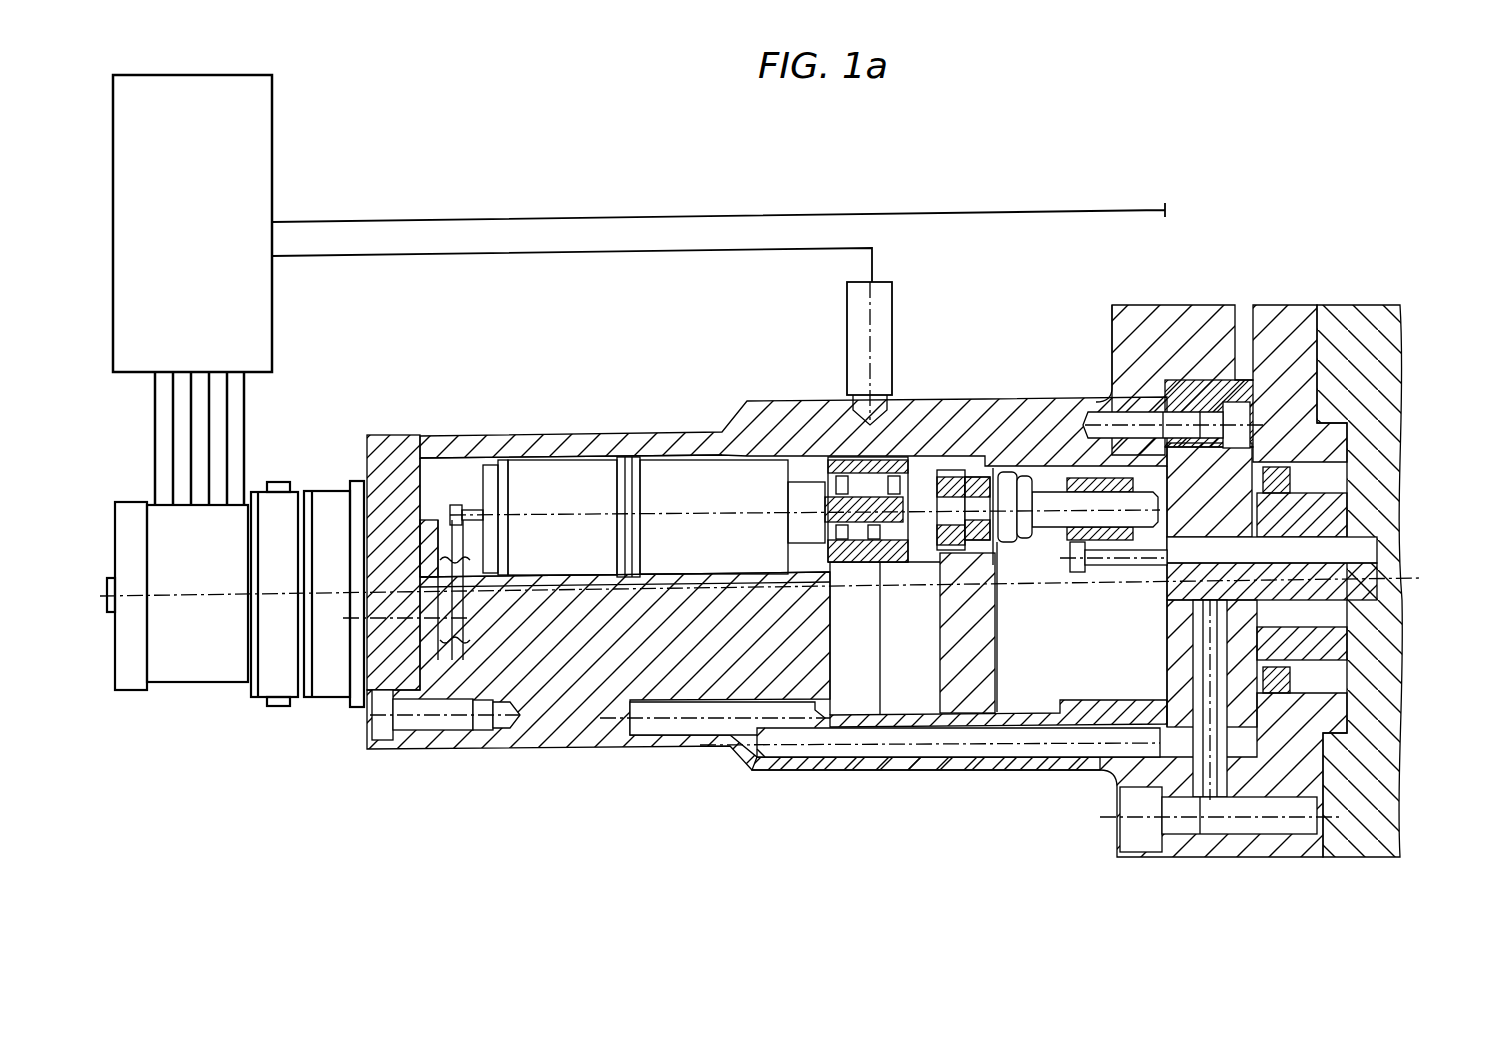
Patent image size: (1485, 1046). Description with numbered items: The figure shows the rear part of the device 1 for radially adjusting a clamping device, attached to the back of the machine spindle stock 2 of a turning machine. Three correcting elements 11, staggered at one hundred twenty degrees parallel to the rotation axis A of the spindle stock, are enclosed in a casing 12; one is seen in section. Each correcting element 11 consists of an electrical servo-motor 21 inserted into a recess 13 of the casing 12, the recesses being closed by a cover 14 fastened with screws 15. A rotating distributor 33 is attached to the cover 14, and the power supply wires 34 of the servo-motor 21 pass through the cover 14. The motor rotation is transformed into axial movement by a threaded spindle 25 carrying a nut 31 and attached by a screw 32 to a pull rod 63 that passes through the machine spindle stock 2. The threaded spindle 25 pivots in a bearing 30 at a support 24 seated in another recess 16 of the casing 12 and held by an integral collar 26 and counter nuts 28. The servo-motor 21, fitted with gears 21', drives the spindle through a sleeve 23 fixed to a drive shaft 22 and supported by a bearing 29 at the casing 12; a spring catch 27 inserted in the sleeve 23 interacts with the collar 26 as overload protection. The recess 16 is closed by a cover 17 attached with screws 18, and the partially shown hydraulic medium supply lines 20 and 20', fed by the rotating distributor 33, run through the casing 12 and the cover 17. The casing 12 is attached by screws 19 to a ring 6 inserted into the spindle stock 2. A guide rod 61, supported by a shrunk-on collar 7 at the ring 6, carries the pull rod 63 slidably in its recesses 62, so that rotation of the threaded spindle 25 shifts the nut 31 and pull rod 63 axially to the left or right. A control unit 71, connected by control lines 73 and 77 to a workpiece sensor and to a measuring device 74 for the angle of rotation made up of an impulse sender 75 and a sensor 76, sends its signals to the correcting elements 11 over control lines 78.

The device 1 is at (525, 830).
The machine spindle stock 2 is at (1367, 815).
The ring 6 is at (1275, 330).
The shrunk-on collar 7 is at (1345, 681).
The correcting element 11 is at (612, 380).
The casing 12 is at (530, 748).
The recess 13 is at (556, 462).
The cover 14 is at (394, 442).
The screw 15 is at (448, 720).
The recess 16 is at (848, 718).
The cover 17 is at (1240, 760).
The screw 18 is at (1147, 415).
The screw 19 is at (1140, 830).
The hydraulic medium supply line 20 is at (895, 764).
The hydraulic medium supply line 20' is at (1205, 755).
The electrical servo-motor 21 is at (645, 466).
The gear 21' is at (645, 466).
The drive shaft 22 is at (822, 495).
The sleeve 23 is at (896, 562).
The support 24 is at (967, 690).
The threaded spindle 25 is at (1048, 530).
The collar 26 is at (967, 458).
The spring catch 27 is at (933, 450).
The counter nut 28 is at (1045, 492).
The bearing 29 is at (893, 528).
The bearing 30 is at (1005, 468).
The nut 31 is at (1085, 478).
The screw 32 is at (1074, 573).
The rotating distributor 33 is at (265, 485).
The power supply wire 34 is at (455, 505).
The guide rod 61 is at (1365, 540).
The recess 62 is at (1342, 582).
The pull rod 63 is at (1325, 660).
The control unit 71 is at (274, 196).
The control line 73 is at (996, 211).
The measuring device 74 is at (897, 256).
The impulse sender 75 is at (850, 402).
The sensor 76 is at (843, 307).
The control line 77 is at (717, 250).
The control line 78 is at (247, 425).
The rotation axis A is at (573, 590).